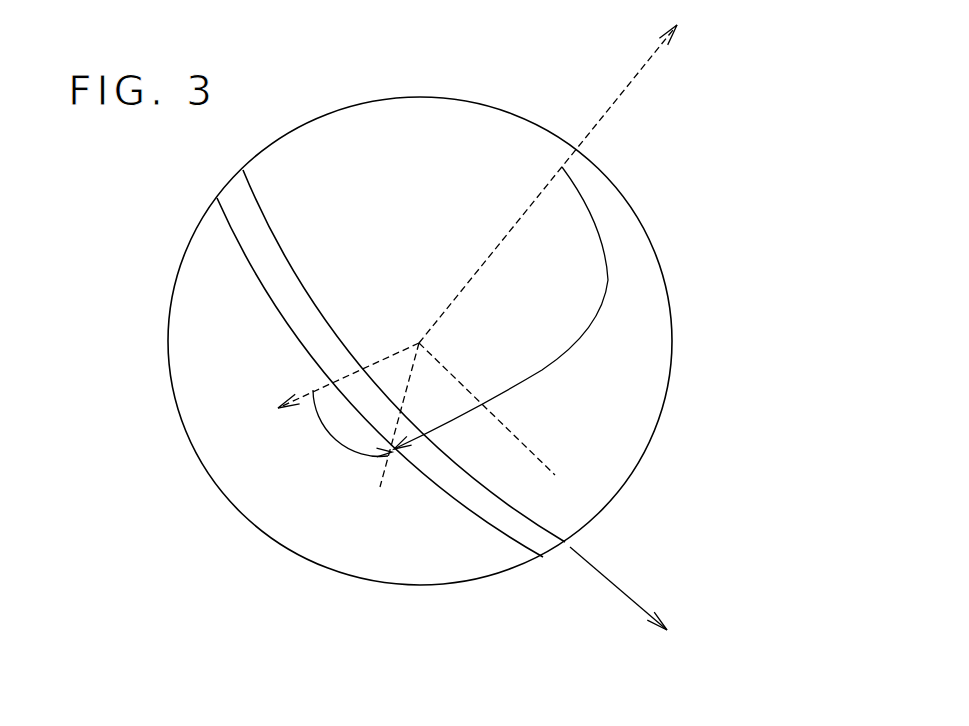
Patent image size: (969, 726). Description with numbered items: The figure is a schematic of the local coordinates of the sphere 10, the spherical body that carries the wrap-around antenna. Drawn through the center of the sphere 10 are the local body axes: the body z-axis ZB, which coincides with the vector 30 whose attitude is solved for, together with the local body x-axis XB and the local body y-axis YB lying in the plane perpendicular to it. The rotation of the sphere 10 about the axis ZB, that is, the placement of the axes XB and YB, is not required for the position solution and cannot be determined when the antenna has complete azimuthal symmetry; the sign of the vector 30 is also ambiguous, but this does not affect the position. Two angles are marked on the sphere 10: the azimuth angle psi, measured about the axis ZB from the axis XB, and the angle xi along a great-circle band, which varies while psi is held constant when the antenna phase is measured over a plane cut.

The sphere 10 is at (650, 235).
The vector 30 is at (613, 105).
The body z-axis ZB is at (707, 31).
The local body x-axis XB is at (324, 377).
The local body y-axis YB is at (639, 606).
The elevation angle xi is at (501, 308).
The azimuth angle psi is at (350, 431).